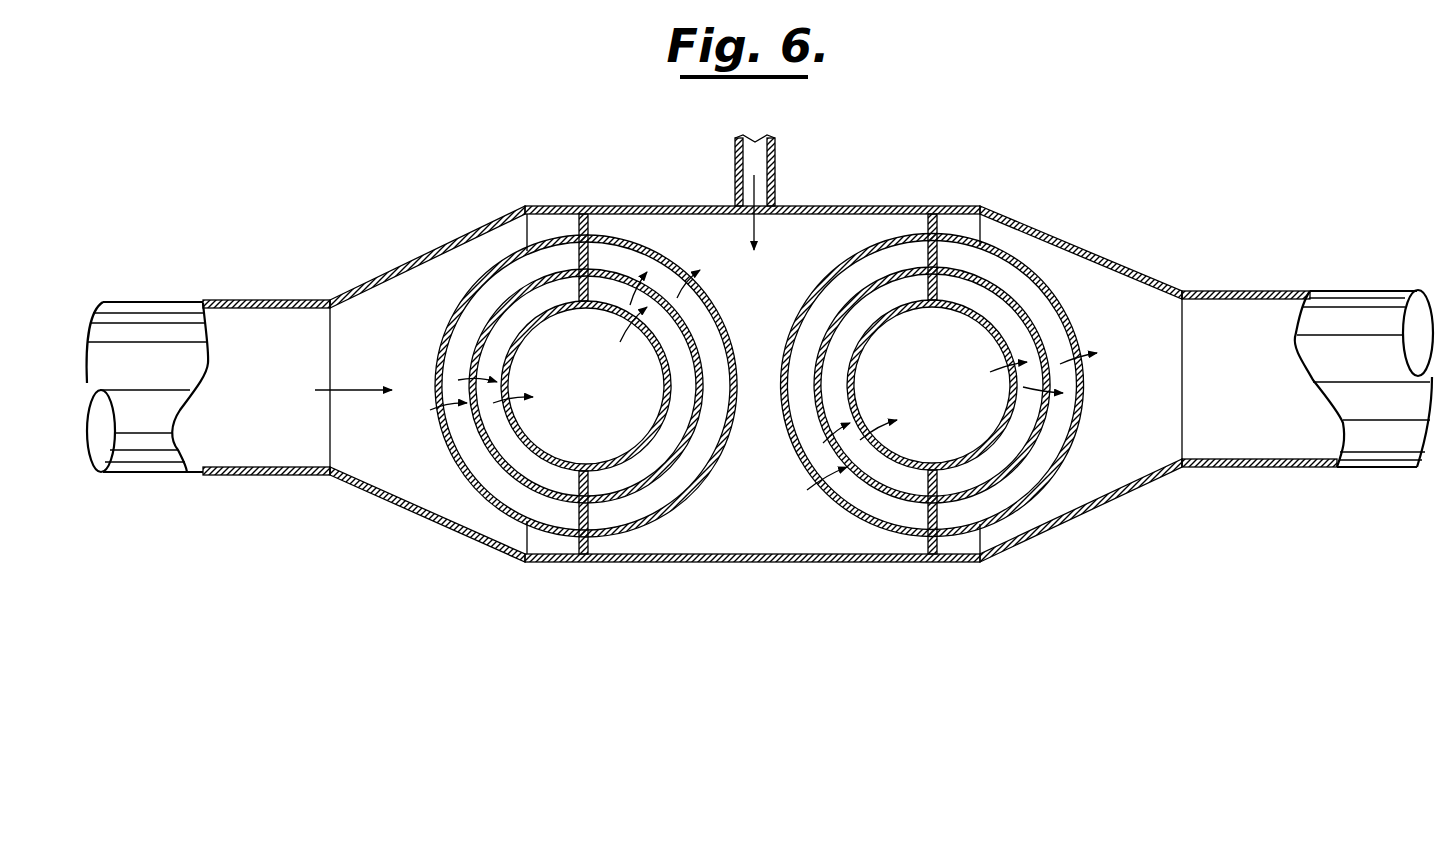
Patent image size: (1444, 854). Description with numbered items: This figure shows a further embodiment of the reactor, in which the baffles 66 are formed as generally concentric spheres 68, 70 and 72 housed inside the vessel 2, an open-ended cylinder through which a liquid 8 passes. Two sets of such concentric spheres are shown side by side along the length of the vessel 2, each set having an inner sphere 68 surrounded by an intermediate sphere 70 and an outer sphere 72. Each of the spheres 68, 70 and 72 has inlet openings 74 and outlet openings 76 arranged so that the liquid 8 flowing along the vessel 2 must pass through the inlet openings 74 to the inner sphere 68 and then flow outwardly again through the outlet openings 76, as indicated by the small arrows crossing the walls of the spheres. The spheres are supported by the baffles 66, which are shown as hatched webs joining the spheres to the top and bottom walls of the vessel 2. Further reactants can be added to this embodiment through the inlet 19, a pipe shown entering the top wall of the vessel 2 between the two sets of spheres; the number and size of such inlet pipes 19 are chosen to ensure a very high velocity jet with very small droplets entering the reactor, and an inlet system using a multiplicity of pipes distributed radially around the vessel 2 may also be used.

The vessel 2 is at (540, 206).
The liquid 8 is at (278, 364).
The inlet 19 is at (775, 160).
The baffles 66 is at (590, 228).
The inner sphere 68 is at (548, 450).
The concentric sphere 70 is at (652, 474).
The concentric sphere 72 is at (515, 520).
The inlet openings 74 is at (470, 345).
The outlet openings 76 is at (702, 300).